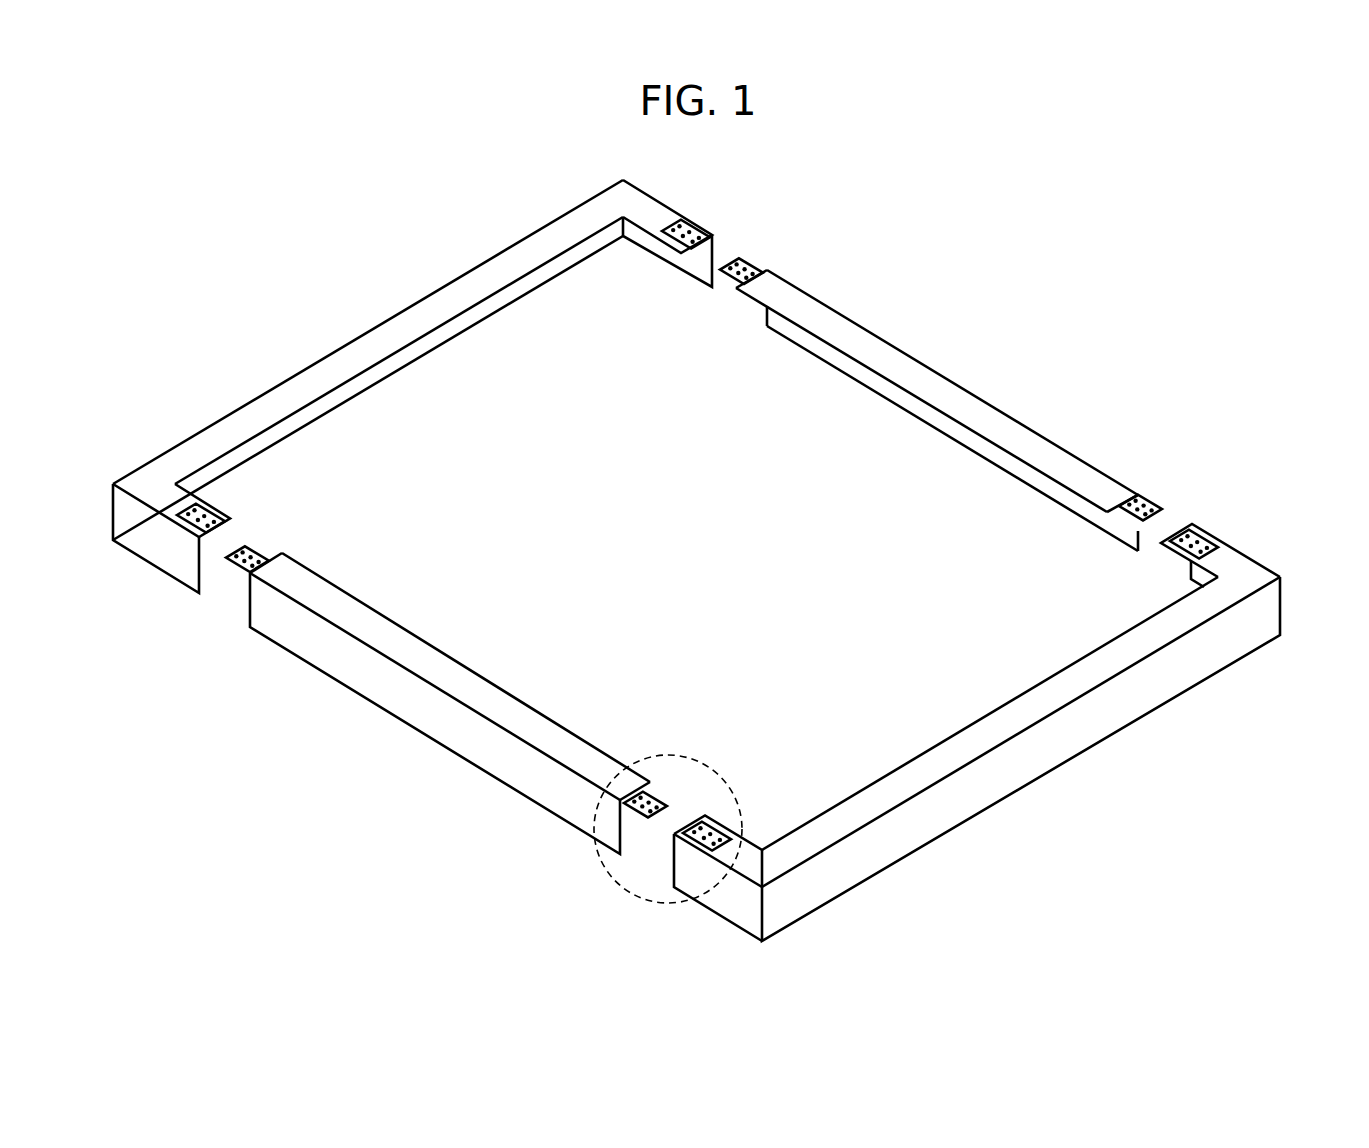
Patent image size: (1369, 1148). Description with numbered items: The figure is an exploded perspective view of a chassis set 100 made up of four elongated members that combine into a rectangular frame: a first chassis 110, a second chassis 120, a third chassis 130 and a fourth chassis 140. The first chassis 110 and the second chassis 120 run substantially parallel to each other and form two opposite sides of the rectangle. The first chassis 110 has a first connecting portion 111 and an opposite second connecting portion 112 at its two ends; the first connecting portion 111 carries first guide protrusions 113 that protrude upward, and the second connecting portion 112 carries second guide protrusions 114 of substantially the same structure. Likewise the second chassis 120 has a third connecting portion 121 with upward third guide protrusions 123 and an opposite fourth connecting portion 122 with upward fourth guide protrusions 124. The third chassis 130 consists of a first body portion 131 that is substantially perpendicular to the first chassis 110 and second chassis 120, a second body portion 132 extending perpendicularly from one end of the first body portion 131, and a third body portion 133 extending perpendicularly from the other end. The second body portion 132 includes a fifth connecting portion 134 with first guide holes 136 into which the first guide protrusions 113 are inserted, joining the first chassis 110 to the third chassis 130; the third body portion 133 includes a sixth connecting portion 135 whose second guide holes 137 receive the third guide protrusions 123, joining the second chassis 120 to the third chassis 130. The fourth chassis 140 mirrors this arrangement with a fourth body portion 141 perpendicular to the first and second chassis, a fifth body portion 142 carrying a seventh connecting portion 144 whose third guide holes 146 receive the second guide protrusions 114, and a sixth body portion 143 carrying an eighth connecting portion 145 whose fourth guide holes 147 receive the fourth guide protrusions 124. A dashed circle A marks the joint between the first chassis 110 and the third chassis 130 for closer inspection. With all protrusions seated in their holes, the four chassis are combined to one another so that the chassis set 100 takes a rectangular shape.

The chassis set 100 is at (415, 197).
The first chassis 110 is at (470, 690).
The first connecting portion 111 is at (620, 820).
The second connecting portion 112 is at (243, 580).
The first guide protrusions 113 is at (652, 793).
The second guide protrusions 114 is at (256, 553).
The second chassis 120 is at (920, 375).
The third connecting portion 121 is at (1152, 493).
The fourth connecting portion 122 is at (743, 257).
The third guide protrusions 123 is at (1130, 521).
The fourth guide protrusions 124 is at (733, 282).
The third chassis 130 is at (1283, 607).
The first body portion 131 is at (1005, 735).
The second body portion 132 is at (722, 853).
The third body portion 133 is at (1228, 552).
The fifth connecting portion 134 is at (690, 837).
The sixth connecting portion 135 is at (1210, 533).
The first guide holes 136 is at (711, 823).
The second guide holes 137 is at (1183, 553).
The fourth chassis 140 is at (112, 512).
The fourth body portion 141 is at (385, 325).
The fifth body portion 142 is at (153, 505).
The sixth body portion 143 is at (662, 203).
The seventh connecting portion 144 is at (183, 515).
The eighth connecting portion 145 is at (691, 222).
The third guide holes 146 is at (215, 516).
The fourth guide holes 147 is at (662, 240).
The enlarged detail region A is at (640, 757).